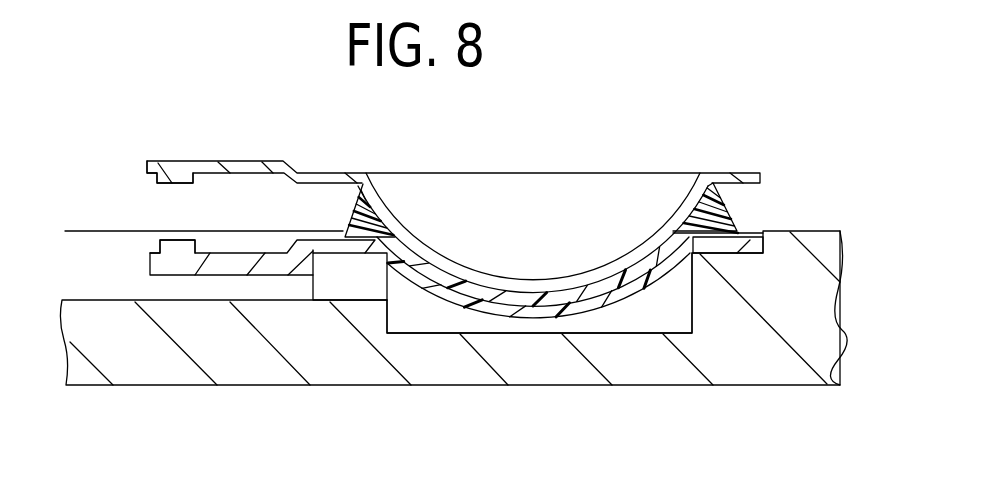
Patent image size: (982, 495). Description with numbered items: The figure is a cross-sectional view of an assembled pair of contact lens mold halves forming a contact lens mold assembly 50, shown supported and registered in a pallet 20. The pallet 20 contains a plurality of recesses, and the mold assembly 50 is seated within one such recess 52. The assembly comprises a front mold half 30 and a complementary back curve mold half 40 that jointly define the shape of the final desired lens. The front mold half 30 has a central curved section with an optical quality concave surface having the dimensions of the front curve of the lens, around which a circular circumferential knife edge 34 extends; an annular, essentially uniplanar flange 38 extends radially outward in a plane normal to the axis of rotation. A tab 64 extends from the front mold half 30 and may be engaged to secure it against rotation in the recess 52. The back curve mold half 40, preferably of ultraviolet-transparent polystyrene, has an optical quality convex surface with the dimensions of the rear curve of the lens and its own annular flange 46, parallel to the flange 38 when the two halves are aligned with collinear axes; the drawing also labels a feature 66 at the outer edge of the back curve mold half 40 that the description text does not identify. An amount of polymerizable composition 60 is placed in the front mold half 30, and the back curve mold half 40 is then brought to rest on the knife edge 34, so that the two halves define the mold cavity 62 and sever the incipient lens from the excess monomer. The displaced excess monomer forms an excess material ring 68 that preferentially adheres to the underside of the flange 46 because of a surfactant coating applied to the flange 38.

The pallet 20 is at (177, 387).
The front mold half 30 is at (447, 272).
The circumferential knife edge 34 is at (671, 214).
The flange 38 is at (240, 276).
The back curve mold half 40 is at (333, 172).
The flange 46 is at (203, 160).
The contact lens mold assembly 50 is at (586, 162).
The recess 52 is at (484, 324).
The polymerizable composition 60 is at (451, 268).
The mold cavity 62 is at (600, 292).
The tab 64 is at (158, 245).
The upper plate lug 66 is at (157, 183).
The excess material ring 68 is at (728, 212).